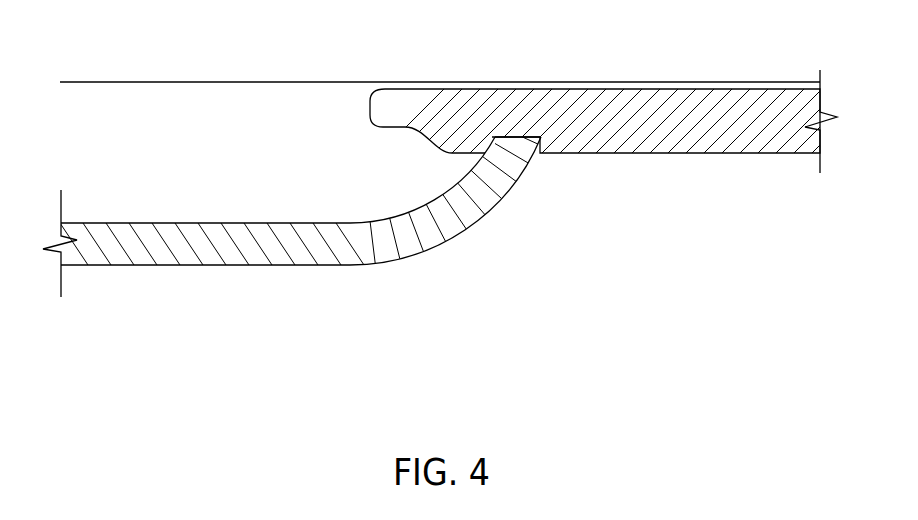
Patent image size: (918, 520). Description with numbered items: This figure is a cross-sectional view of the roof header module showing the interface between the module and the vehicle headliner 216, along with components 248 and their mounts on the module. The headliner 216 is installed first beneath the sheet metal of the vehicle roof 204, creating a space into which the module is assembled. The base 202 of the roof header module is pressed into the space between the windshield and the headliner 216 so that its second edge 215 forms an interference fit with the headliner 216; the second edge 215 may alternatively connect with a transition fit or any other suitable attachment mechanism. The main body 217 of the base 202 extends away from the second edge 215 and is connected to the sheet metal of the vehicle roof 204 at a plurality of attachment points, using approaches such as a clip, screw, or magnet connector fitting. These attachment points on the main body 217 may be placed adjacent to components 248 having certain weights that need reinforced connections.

The vehicle roof 204 is at (295, 81).
The headliner 216 is at (662, 138).
The base 202 is at (318, 218).
The main body 217 is at (223, 257).
The second edge 215 is at (482, 190).
The components 248 is at (519, 142).